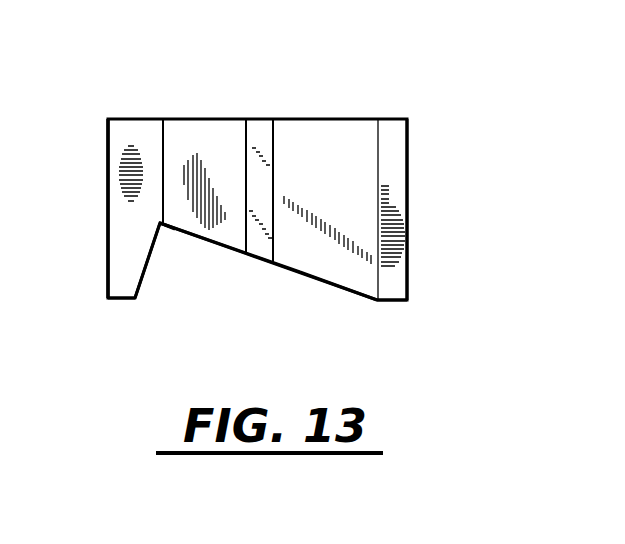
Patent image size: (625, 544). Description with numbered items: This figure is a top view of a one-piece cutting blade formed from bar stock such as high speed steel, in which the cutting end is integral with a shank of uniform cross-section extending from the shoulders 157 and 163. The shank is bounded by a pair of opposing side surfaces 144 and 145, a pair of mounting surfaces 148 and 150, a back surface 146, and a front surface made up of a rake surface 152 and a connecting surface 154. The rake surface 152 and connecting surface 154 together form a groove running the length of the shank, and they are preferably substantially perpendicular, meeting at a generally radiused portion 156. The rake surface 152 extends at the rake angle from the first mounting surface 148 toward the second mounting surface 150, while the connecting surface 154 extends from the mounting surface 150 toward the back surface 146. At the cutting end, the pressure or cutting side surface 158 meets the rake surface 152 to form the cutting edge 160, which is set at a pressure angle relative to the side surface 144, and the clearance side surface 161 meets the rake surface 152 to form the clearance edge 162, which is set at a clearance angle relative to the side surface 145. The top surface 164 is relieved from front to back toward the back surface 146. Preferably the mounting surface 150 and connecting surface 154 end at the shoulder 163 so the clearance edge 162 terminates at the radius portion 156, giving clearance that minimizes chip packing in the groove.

The side surface 144 is at (392, 225).
The side surface 145 is at (108, 172).
The back surface 146 is at (230, 118).
The mounting surface 148 is at (395, 304).
The mounting surface 150 is at (121, 300).
The rake surface 152 is at (320, 289).
The connecting surface 154 is at (148, 268).
The radius portion 156 is at (158, 227).
The shoulder 157 is at (393, 174).
The cutting side surface 158 is at (350, 137).
The cutting edge 160 is at (352, 298).
The clearance side surface 161 is at (193, 134).
The clearance edge 162 is at (223, 248).
The shoulder 163 is at (136, 131).
The top surface 164 is at (259, 137).